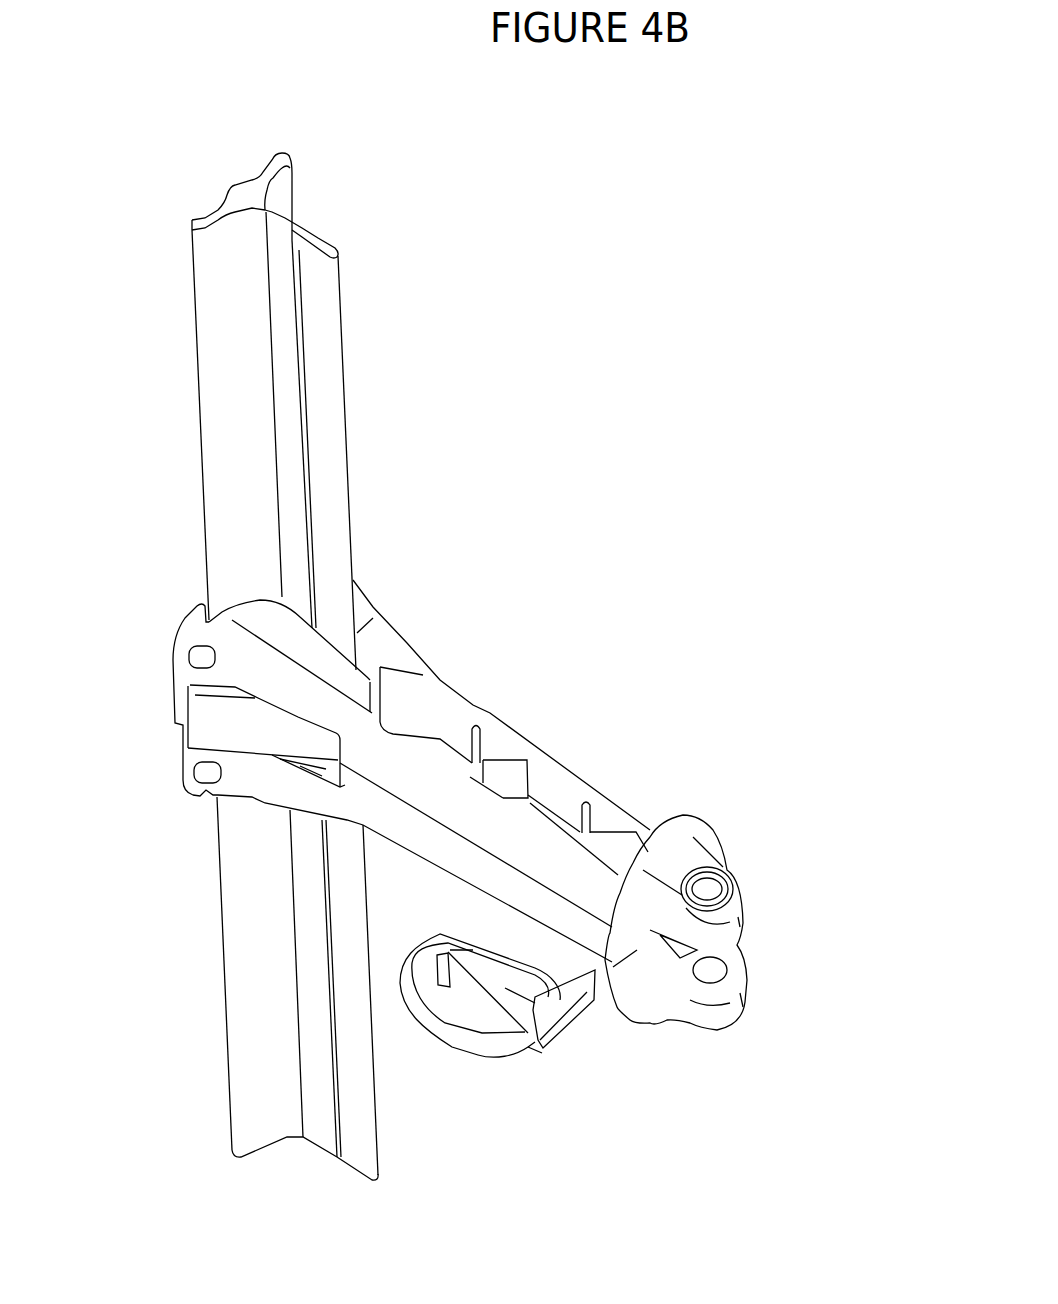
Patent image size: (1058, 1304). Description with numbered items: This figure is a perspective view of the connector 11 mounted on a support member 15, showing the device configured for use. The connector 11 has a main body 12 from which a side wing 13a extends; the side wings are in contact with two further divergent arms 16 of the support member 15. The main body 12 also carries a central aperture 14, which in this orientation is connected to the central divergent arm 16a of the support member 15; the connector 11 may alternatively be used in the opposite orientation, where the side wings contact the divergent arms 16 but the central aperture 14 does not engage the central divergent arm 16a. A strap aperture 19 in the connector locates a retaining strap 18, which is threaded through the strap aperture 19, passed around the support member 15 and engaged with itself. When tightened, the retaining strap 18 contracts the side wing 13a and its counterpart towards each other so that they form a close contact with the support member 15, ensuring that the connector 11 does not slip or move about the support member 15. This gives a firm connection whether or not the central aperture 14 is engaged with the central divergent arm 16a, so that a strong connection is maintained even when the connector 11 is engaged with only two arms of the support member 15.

The connector 11 is at (712, 683).
The main body 12 is at (503, 752).
The side wing 13a is at (182, 668).
The central aperture 14 is at (365, 648).
The support member 15 is at (217, 383).
The divergent arm 16 is at (281, 152).
The central divergent arm 16a is at (325, 237).
The retaining strap 18 is at (243, 728).
The strap aperture 19 is at (335, 753).